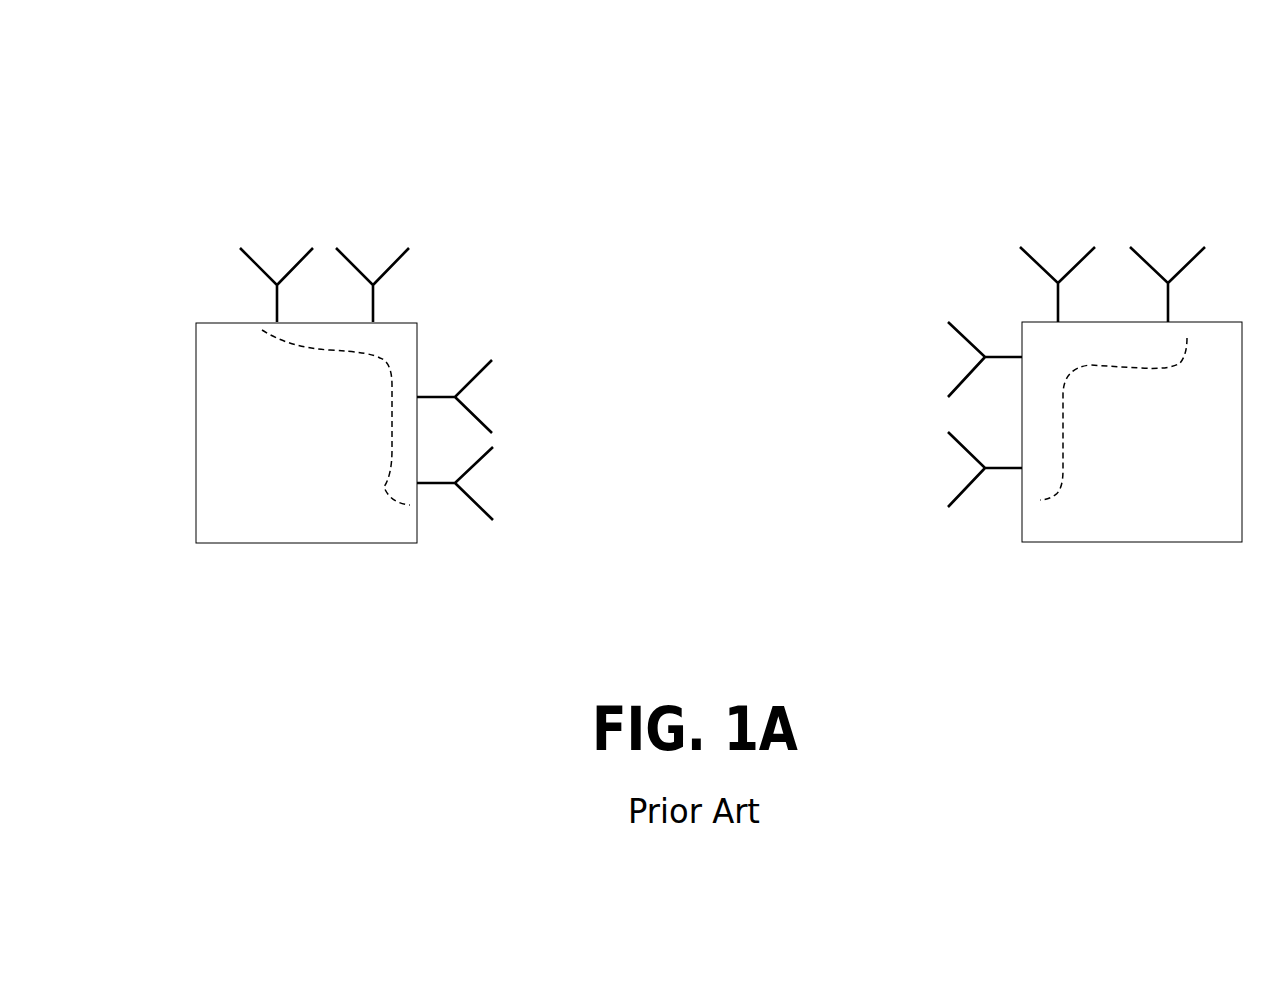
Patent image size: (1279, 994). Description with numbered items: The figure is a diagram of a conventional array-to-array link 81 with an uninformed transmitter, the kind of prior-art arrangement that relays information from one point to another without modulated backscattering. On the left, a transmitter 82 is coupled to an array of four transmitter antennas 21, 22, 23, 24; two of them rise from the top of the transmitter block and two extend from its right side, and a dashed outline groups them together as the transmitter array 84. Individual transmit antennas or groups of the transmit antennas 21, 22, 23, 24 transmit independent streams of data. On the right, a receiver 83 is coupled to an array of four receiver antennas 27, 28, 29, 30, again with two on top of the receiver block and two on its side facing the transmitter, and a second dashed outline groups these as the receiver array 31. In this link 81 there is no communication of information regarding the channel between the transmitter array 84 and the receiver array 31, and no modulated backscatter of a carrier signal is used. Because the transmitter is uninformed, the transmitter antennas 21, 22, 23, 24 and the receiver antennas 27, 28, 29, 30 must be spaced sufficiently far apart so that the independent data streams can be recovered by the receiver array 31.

The array-to-array link 81 is at (773, 128).
The transmitter 82 is at (253, 533).
The receiver 83 is at (1221, 530).
The transmitter array 84 is at (382, 478).
The transmitter antenna 21 is at (502, 487).
The transmitter antenna 22 is at (467, 353).
The transmitter antenna 23 is at (381, 243).
The transmitter antenna 24 is at (280, 237).
The receiver antenna 27 is at (1153, 232).
The receiver antenna 28 is at (1060, 237).
The receiver antenna 29 is at (947, 353).
The receiver antenna 30 is at (938, 465).
The receiver array 31 is at (1058, 502).